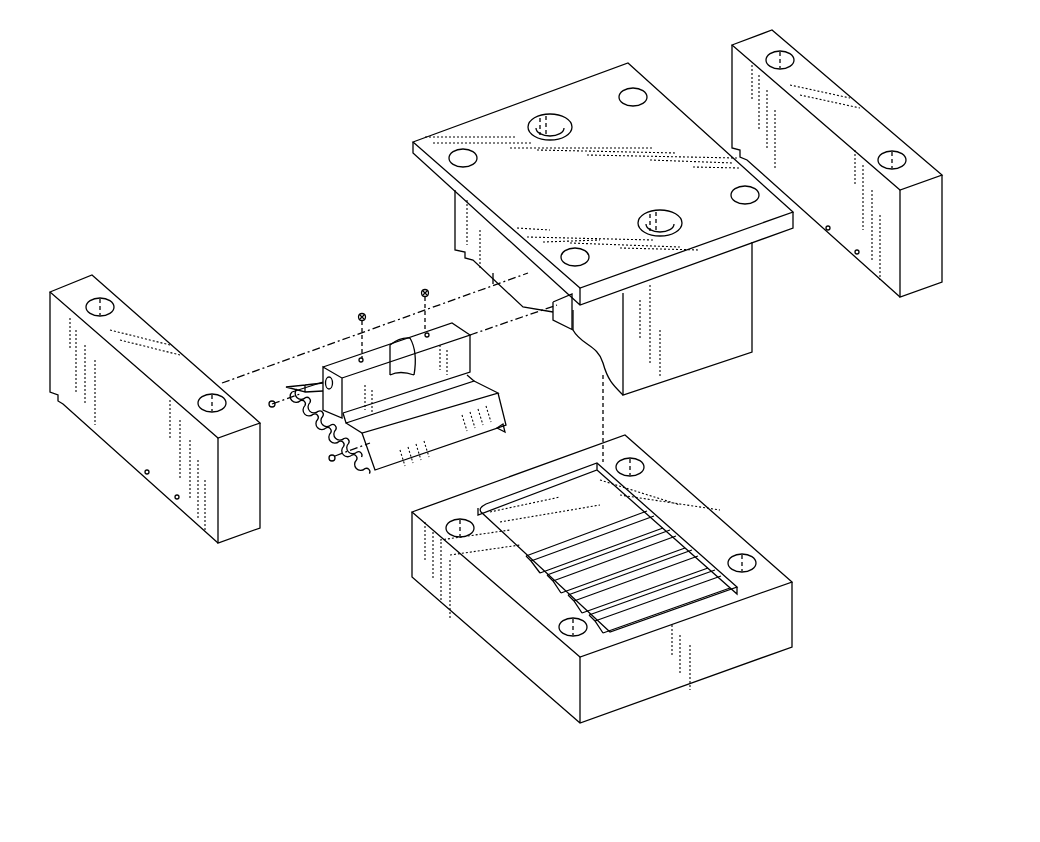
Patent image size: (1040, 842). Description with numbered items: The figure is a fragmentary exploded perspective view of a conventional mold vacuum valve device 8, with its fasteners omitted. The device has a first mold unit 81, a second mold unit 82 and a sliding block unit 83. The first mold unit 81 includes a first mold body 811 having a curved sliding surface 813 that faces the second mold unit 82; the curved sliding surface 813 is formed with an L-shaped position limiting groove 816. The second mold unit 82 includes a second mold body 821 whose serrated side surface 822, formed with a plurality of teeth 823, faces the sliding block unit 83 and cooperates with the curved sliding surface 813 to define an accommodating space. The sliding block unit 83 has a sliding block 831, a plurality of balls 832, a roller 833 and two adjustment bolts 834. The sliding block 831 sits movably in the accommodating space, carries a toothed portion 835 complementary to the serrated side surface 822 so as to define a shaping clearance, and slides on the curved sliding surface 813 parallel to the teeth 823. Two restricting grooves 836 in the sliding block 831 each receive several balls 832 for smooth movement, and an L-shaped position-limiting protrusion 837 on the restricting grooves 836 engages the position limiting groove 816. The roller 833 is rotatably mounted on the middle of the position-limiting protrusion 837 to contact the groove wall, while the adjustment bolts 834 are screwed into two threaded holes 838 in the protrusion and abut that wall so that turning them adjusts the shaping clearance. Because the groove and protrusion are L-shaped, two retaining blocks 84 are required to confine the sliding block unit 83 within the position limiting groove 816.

The mold vacuum valve device 8 is at (984, 83).
The first mold unit 81 is at (490, 108).
The first mold body 811 is at (666, 314).
The curved sliding surface 813 is at (593, 352).
The position limiting groove 816 is at (560, 313).
The second mold unit 82 is at (661, 579).
The second mold body 821 is at (768, 620).
The serrated side surface 822 is at (653, 510).
The teeth 823 is at (730, 580).
The sliding block unit 83 is at (325, 285).
The sliding block 831 is at (403, 452).
The balls 832 is at (330, 460).
The roller 833 is at (403, 357).
The adjustment bolts 834 is at (425, 289).
The toothed portion 835 is at (370, 473).
The restricting grooves 836 is at (317, 382).
The position-limiting protrusion 837 is at (325, 367).
The threaded holes 838 is at (427, 335).
The retaining blocks 84 is at (917, 238).